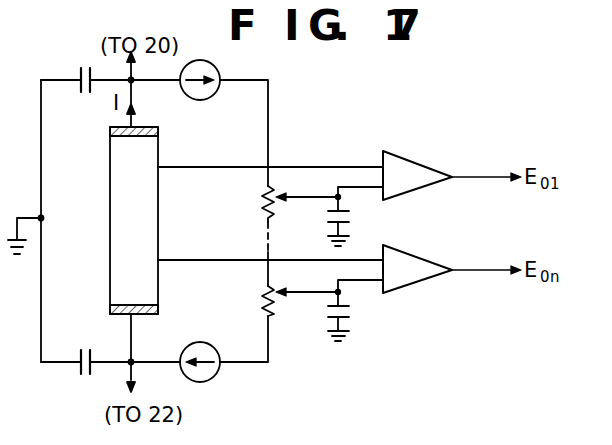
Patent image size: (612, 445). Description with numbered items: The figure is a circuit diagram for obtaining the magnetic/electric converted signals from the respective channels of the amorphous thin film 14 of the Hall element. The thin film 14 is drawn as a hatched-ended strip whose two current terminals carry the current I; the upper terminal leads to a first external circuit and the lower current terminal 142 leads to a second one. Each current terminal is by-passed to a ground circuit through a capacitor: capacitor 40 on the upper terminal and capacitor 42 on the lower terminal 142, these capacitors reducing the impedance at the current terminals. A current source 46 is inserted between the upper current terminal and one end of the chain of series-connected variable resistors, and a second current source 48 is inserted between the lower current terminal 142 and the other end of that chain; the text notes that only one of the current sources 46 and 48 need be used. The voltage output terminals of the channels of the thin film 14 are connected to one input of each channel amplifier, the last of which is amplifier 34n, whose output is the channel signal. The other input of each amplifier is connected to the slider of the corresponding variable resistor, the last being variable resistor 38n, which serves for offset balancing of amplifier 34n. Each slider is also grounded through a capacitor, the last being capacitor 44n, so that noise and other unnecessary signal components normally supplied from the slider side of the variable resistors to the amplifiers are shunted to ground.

The thin film 14 is at (112, 214).
The current terminal 142 is at (147, 314).
The capacitor 40 is at (85, 62).
The capacitor 42 is at (84, 378).
The current source 46 is at (216, 94).
The current source 48 is at (213, 376).
The variable resistor 38n is at (257, 295).
The amplifier 34n is at (423, 263).
The capacitor 44n is at (350, 313).